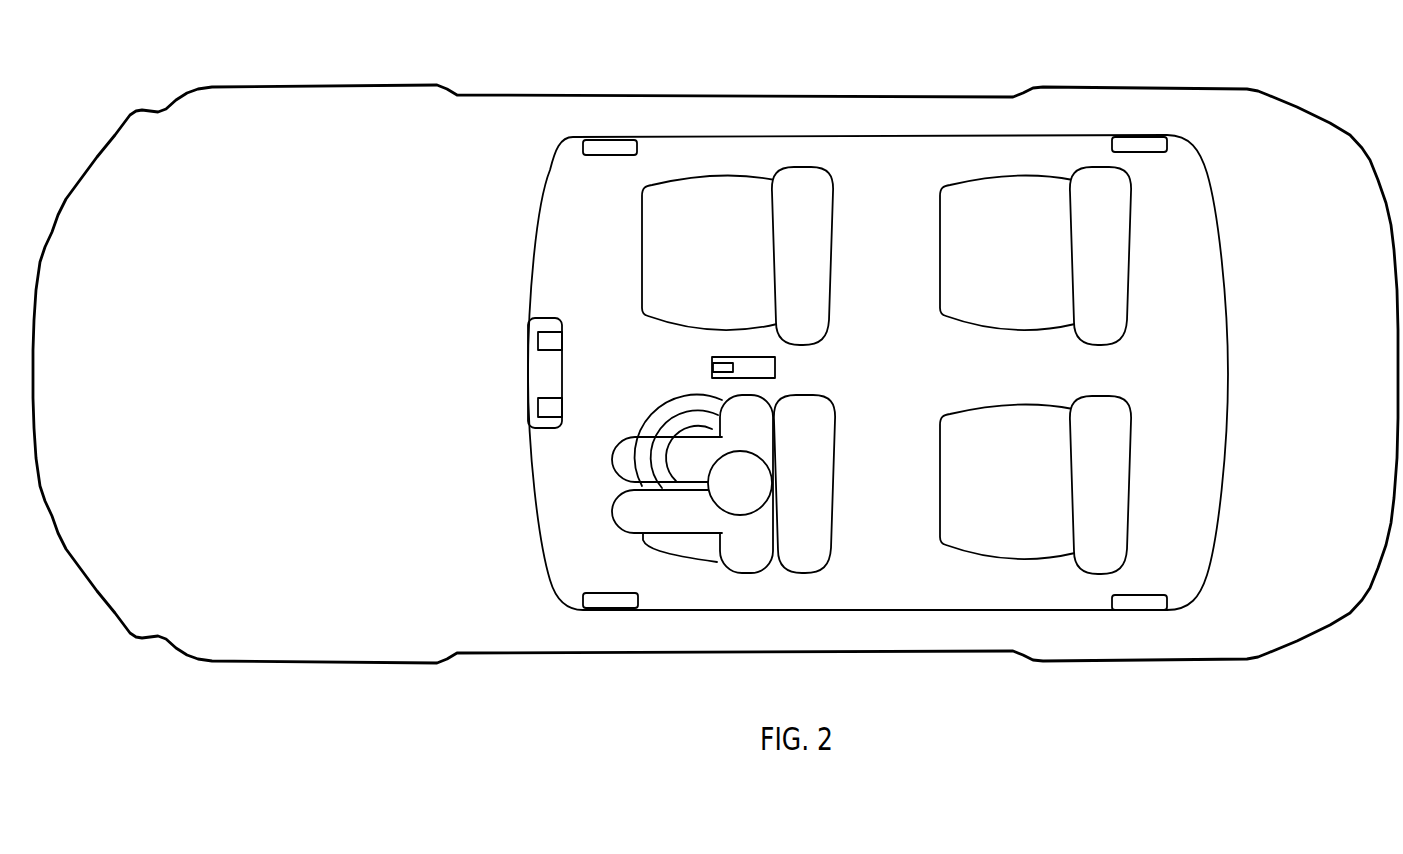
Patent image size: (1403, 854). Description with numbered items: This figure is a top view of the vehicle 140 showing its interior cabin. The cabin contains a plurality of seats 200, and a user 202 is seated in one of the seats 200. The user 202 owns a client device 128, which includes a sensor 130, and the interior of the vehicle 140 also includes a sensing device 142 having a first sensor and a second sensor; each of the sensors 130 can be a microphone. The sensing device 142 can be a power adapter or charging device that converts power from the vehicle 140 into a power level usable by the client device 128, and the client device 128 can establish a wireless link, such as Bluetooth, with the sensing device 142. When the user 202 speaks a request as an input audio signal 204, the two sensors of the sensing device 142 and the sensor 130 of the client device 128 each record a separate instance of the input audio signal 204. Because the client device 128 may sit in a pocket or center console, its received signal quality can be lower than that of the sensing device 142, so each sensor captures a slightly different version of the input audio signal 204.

The vehicle 140 is at (1267, 93).
The seats 200 is at (833, 257).
The user 202 is at (713, 498).
The input audio signal 204 is at (662, 408).
The sensing device 142 is at (540, 368).
The client device 128 is at (775, 367).
The sensor 130 is at (712, 367).